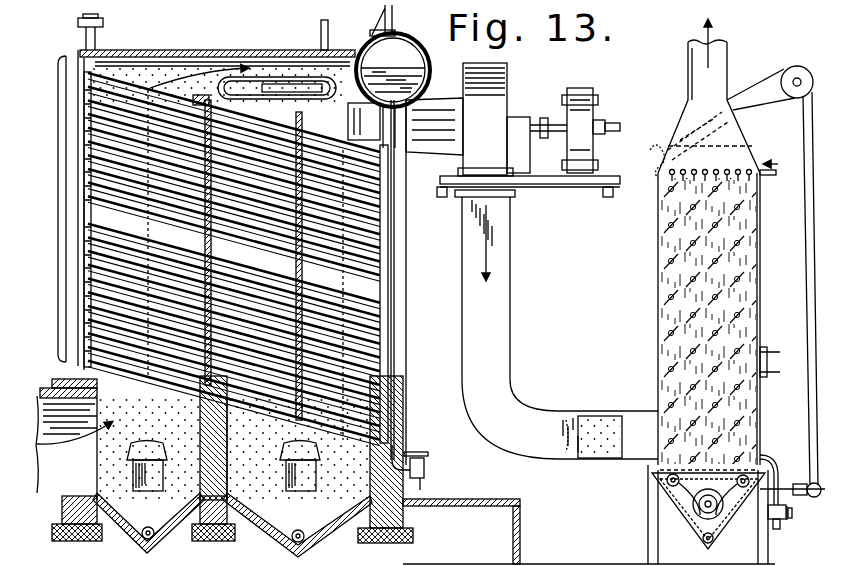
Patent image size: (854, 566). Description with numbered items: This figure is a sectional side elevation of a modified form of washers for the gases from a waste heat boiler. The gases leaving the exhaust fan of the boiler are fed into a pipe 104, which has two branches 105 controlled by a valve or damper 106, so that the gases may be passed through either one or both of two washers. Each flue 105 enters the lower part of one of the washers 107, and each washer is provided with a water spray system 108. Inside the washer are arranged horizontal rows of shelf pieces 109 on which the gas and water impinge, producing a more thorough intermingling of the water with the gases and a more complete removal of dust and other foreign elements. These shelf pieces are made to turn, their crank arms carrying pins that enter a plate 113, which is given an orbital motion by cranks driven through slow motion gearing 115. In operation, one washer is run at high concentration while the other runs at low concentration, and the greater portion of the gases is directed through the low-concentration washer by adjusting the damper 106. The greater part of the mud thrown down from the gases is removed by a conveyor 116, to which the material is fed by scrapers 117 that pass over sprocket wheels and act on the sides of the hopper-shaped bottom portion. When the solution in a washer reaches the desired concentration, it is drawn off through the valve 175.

The pipe 104 is at (503, 300).
The branch flue 105 is at (642, 460).
The valve or damper 106 is at (600, 420).
The washer 107 is at (658, 335).
The water spray system 108 is at (743, 172).
The shelf pieces 109 is at (680, 266).
The plate 113 is at (758, 223).
The slow motion gearing 115 is at (724, 164).
The conveyor 116 is at (713, 543).
The scrapers 117 is at (675, 508).
The valve 175 is at (787, 522).